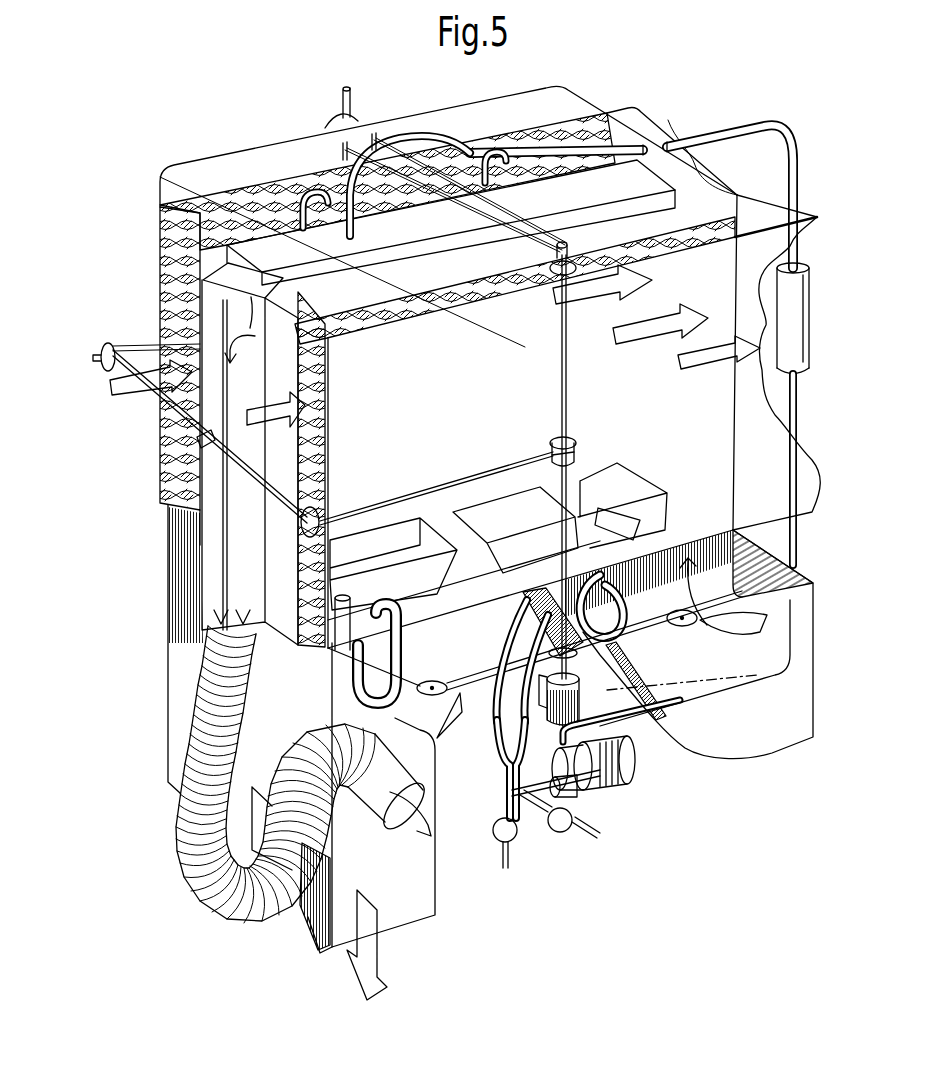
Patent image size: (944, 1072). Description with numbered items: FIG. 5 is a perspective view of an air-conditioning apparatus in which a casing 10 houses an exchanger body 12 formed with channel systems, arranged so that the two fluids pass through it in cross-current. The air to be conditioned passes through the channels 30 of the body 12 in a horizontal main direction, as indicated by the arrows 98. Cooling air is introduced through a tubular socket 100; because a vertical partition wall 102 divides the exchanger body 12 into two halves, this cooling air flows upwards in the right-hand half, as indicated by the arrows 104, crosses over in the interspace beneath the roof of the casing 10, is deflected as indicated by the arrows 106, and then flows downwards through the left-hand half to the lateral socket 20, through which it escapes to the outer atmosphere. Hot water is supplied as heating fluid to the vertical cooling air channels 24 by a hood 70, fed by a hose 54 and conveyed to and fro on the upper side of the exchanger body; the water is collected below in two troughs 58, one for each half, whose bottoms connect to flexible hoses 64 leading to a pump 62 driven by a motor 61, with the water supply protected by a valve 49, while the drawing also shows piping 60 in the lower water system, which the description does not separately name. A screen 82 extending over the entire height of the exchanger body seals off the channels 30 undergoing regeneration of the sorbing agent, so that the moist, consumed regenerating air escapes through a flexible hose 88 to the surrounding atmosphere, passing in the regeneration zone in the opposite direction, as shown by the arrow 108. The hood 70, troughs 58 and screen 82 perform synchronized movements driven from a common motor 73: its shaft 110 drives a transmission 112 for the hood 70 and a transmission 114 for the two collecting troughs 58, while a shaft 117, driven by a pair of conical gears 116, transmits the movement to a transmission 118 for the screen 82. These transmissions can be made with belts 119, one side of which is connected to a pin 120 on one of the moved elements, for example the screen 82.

The casing 10 is at (673, 170).
The exchanger body 12 is at (731, 207).
The lateral socket 20 is at (410, 917).
The channels 24 is at (480, 300).
The channels 30 is at (333, 430).
The valve 49 is at (560, 832).
The hose 54 is at (420, 138).
The troughs 58 is at (400, 508).
The branched supply tube 60 is at (545, 774).
The motor 61 is at (637, 752).
The pump 62 is at (580, 792).
The flexible hoses 64 is at (385, 697).
The hood 70 is at (590, 201).
The common motor 73 is at (580, 690).
The screen 82 is at (210, 560).
The flexible hose 88 is at (225, 920).
The arrows 98 is at (153, 380).
The tubular socket 100 is at (753, 740).
The vertical partition wall 102 is at (410, 208).
The arrows 104 is at (618, 515).
The arrows 106 is at (306, 192).
The arrow 108 is at (255, 338).
The shaft 110 is at (560, 362).
The transmission 112 is at (352, 118).
The transmission 114 is at (703, 630).
The conical gears 116 is at (552, 440).
The shaft 117 is at (368, 502).
The transmission 118 is at (110, 343).
The belts 119 is at (300, 518).
The pin 120 is at (213, 437).